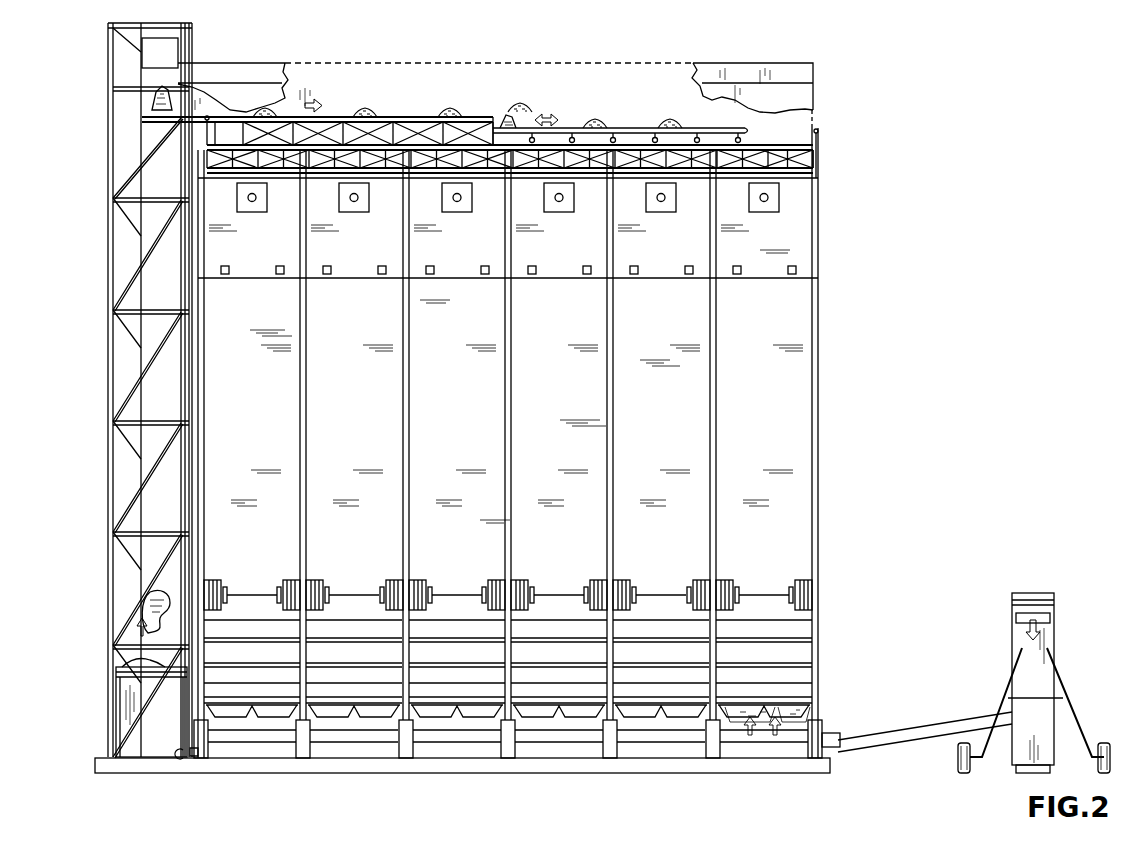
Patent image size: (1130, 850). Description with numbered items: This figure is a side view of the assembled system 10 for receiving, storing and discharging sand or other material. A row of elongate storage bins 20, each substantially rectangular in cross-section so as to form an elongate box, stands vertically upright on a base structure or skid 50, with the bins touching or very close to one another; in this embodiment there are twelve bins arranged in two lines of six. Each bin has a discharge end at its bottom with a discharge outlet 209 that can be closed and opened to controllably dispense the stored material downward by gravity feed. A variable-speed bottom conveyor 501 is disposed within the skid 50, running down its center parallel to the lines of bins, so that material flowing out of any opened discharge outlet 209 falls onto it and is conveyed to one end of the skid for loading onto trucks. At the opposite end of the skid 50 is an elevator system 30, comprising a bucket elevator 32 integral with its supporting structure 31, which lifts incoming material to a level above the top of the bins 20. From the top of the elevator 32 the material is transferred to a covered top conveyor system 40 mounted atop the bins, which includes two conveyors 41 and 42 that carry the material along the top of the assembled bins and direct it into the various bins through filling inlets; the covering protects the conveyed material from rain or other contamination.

The system 10 is at (974, 52).
The elongate storage bins 20 is at (690, 397).
The discharge outlet 209 is at (780, 712).
The elevator system 30 is at (207, 48).
The supporting structure 31 is at (108, 286).
The bucket elevator 32 is at (150, 437).
The covered top conveyor system 40 is at (837, 70).
The conveyor 41 is at (403, 117).
The conveyor 42 is at (630, 130).
The base structure (skid) 50 is at (844, 768).
The variable-speed bottom conveyor 501 is at (838, 735).